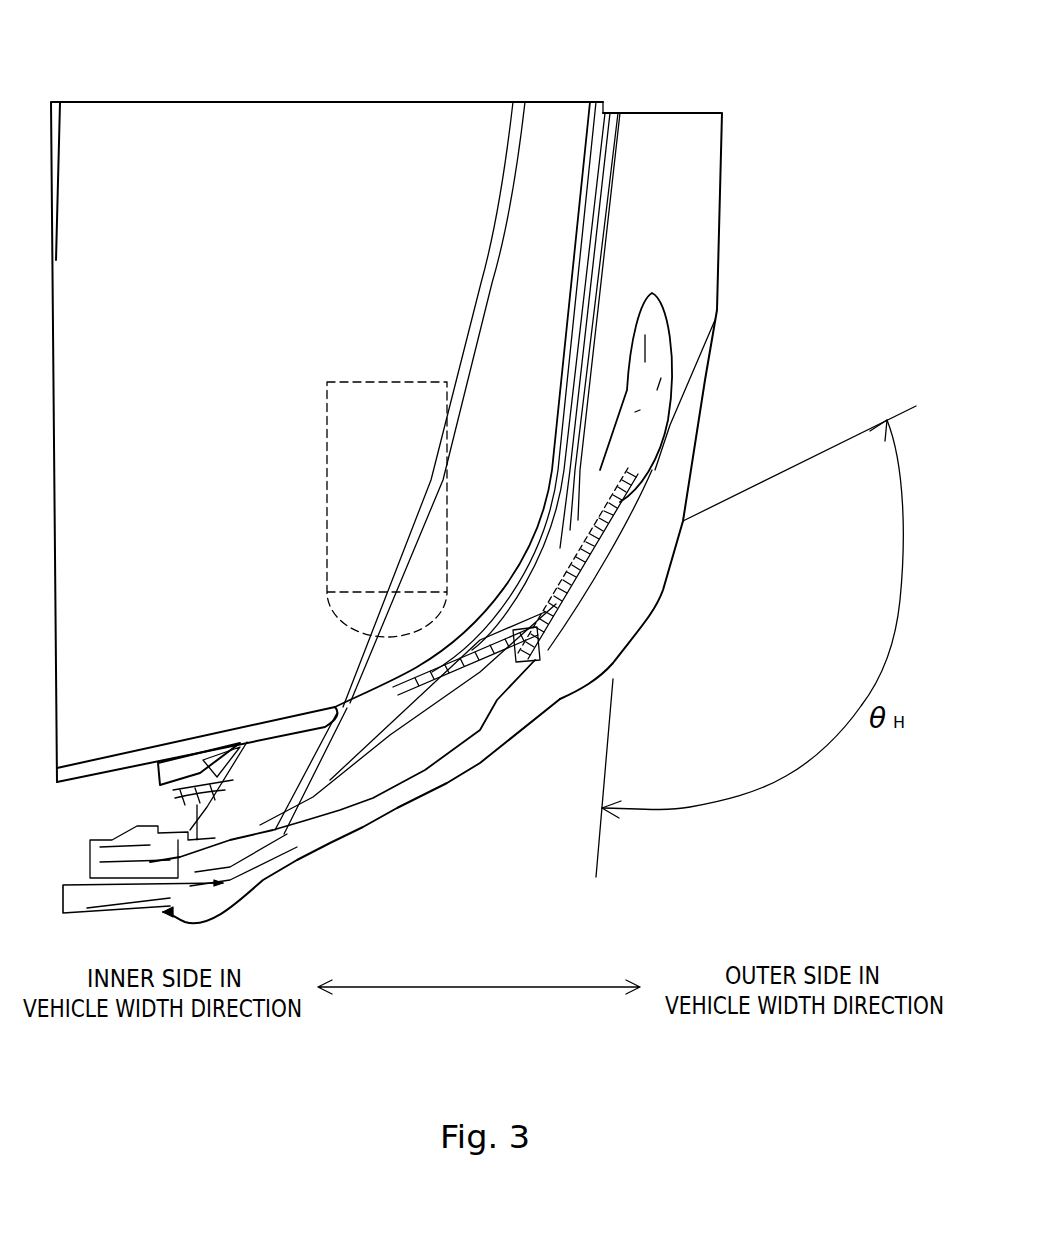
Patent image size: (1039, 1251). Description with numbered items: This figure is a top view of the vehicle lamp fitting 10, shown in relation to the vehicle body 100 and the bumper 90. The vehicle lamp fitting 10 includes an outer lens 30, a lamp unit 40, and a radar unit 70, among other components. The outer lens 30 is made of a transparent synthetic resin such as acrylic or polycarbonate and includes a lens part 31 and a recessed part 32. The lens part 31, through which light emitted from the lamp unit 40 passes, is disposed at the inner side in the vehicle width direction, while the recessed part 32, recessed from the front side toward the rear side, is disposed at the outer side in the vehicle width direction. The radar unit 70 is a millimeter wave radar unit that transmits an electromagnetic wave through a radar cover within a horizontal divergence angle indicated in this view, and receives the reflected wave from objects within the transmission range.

The vehicle lamp fitting 10 is at (412, 71).
The vehicle body 100 is at (233, 102).
The lamp unit 40 is at (385, 380).
The radar unit 70 is at (606, 546).
The bumper 90 is at (664, 586).
The recessed part 32 is at (623, 602).
The lens part 31 is at (425, 772).
The outer lens 30 is at (337, 832).